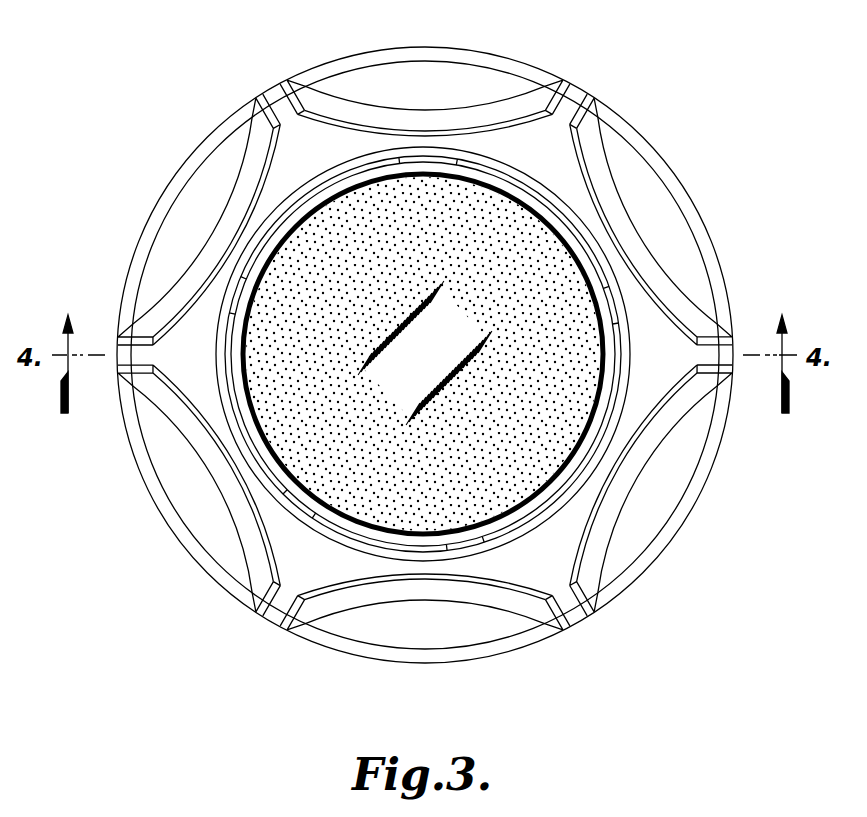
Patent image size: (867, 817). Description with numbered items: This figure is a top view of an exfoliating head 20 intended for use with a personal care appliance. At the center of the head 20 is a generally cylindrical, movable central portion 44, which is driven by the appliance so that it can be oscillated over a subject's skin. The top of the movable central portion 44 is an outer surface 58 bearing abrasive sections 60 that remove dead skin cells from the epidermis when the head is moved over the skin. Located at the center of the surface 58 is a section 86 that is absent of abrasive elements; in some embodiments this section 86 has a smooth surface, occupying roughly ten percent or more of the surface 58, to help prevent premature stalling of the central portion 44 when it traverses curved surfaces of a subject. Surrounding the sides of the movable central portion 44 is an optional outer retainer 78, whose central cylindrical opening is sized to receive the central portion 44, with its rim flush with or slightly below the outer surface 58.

The exfoliating head 20 is at (677, 134).
The movable central portion 44 is at (597, 260).
The surface 58 is at (393, 310).
The abrasive sections 60 is at (455, 185).
The outer retainer 78 is at (653, 548).
The section 86 is at (429, 365).